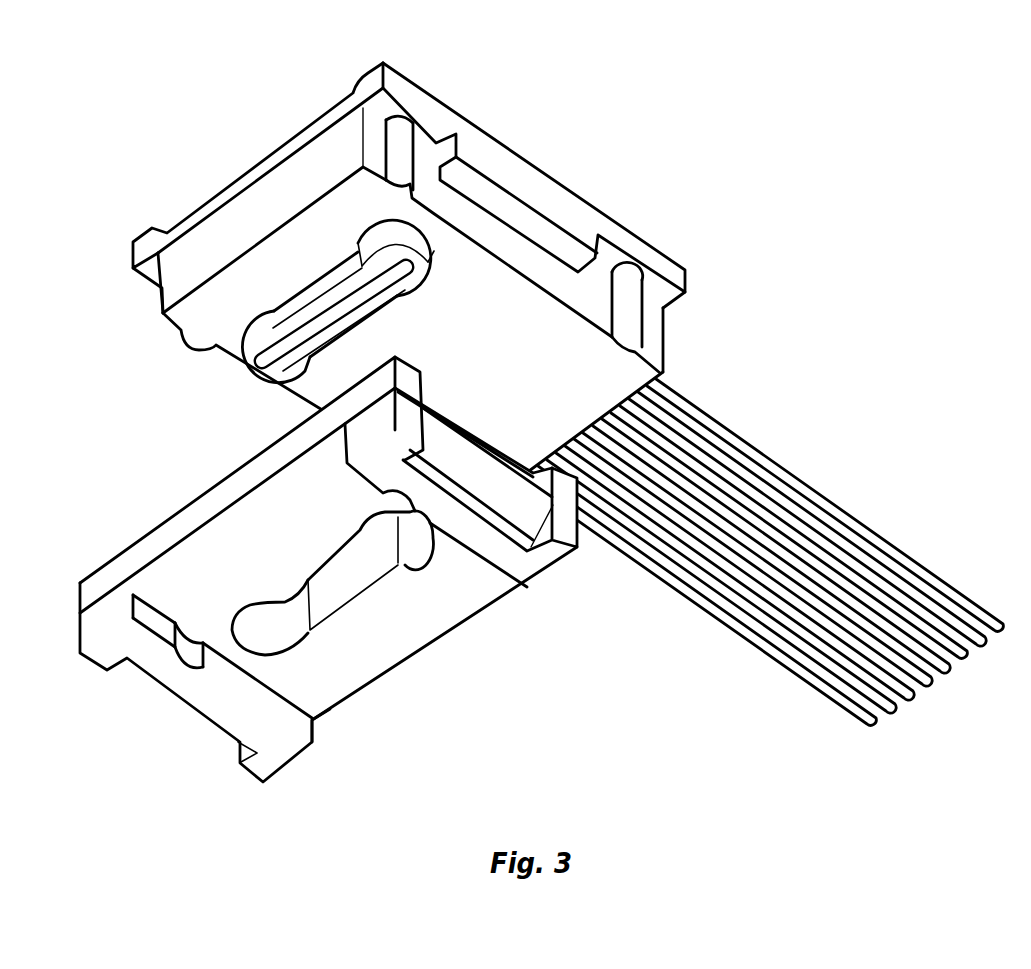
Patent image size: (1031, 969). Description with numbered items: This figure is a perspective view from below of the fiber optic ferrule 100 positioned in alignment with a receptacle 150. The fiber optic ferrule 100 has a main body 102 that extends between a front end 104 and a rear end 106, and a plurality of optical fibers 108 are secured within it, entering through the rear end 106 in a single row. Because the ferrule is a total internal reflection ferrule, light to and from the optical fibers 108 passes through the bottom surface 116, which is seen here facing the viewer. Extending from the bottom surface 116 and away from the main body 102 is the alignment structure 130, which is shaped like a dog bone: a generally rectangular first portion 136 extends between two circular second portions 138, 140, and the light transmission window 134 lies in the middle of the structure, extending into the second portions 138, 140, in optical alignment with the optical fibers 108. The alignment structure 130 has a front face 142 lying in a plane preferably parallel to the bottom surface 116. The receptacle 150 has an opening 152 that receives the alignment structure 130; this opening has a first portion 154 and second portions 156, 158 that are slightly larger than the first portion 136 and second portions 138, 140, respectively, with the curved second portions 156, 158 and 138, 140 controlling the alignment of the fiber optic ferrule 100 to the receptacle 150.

The fiber optic ferrule 100 is at (614, 150).
The main body 102 is at (404, 242).
The front end 104 is at (263, 193).
The rear end 106 is at (663, 335).
The optical fibers 108 is at (872, 535).
The bottom surface 116 is at (542, 400).
The alignment structure 130 is at (283, 284).
The light transmission window 134 is at (347, 312).
The first portion 136 is at (283, 310).
The second portion 138 is at (420, 268).
The second portion 140 is at (253, 367).
The front face 142 is at (290, 388).
The receptacle 150 is at (328, 576).
The opening 152 is at (270, 637).
The first portion 154 is at (363, 593).
The second portion 156 is at (317, 708).
The second portion 158 is at (490, 593).